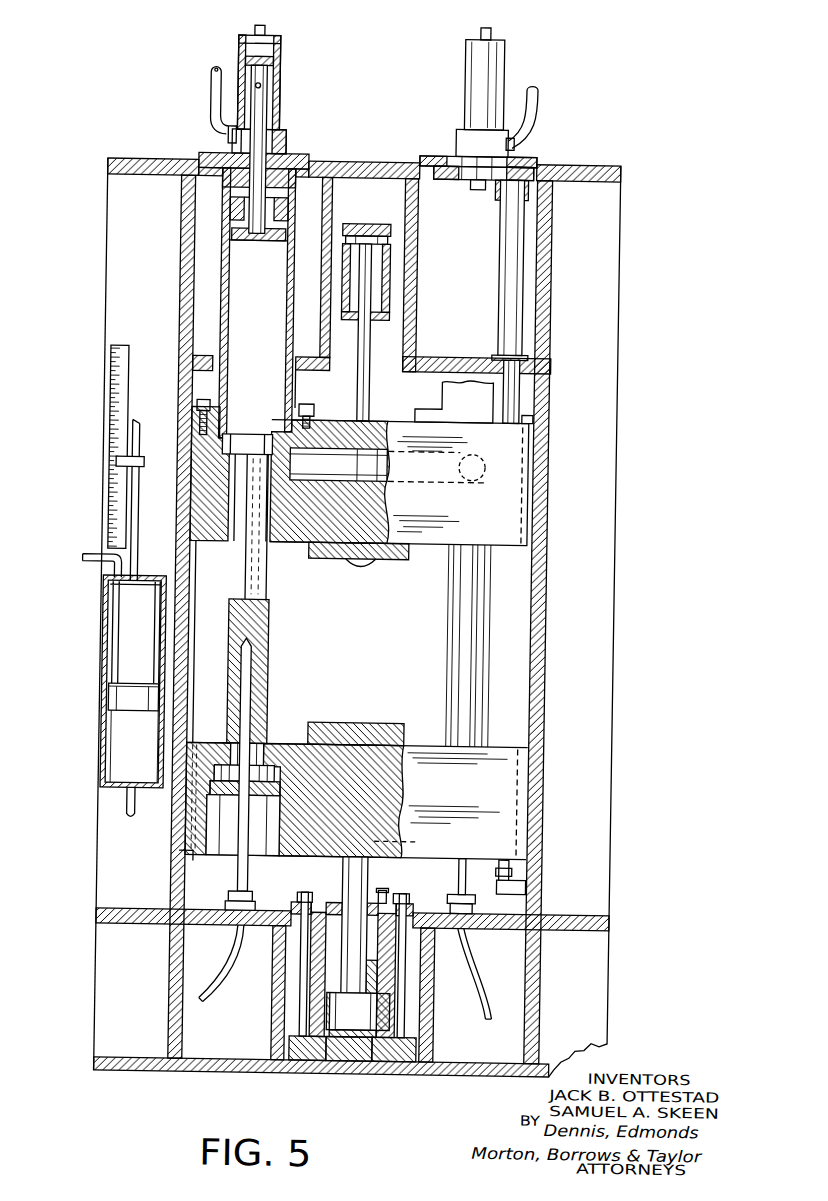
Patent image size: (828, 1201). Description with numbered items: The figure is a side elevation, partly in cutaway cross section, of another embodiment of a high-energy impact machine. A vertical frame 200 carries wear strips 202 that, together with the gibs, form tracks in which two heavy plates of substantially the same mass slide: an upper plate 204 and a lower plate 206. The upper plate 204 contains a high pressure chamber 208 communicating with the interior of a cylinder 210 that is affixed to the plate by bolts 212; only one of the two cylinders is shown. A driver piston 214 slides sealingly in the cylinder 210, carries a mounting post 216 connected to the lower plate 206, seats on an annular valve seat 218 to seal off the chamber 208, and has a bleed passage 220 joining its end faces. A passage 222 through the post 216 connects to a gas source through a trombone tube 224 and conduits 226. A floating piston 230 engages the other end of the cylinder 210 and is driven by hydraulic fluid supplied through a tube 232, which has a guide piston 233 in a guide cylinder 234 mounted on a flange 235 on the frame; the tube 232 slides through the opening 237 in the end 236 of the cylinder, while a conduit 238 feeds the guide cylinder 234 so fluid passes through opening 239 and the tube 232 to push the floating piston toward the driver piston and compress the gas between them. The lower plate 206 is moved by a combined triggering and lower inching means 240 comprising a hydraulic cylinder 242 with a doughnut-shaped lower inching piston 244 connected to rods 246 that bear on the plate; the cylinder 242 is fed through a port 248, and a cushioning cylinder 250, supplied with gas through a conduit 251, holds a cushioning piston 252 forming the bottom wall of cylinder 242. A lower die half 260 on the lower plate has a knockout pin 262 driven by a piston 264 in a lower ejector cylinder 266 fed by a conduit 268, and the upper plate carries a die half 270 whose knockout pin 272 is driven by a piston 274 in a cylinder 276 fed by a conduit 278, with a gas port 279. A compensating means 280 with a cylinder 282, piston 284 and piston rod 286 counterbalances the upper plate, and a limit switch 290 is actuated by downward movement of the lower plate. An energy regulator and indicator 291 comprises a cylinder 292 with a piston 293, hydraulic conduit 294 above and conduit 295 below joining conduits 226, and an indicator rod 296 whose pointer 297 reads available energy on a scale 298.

The vertical frame 200 is at (102, 303).
The wear strips 202 is at (542, 672).
The upper plate 204 is at (516, 506).
The lower plate 206 is at (501, 800).
The high pressure chamber 208 is at (406, 483).
The cylinder 210 is at (217, 325).
The bolts 212 is at (303, 405).
The driver piston 214 is at (261, 440).
The mounting post 216 is at (264, 600).
The annular valve seat 218 is at (220, 481).
The bleed passage 220 is at (277, 436).
The passage 222 is at (251, 667).
The trombone tube 224 is at (252, 707).
The conduits 226 is at (232, 960).
The floating piston 230 is at (222, 213).
The tube 232 is at (258, 117).
The guide piston 233 is at (264, 63).
The guide cylinder 234 is at (275, 92).
The flange 235 is at (212, 155).
The end of cylinder 236 is at (224, 186).
The opening 237 is at (272, 152).
The conduit 238 is at (207, 92).
The opening 239 is at (253, 86).
The combined triggering and lower inching means 240 is at (235, 1084).
The hydraulic cylinder 242 is at (398, 977).
The lower inching piston 244 is at (316, 978).
The rods 246 is at (388, 897).
The port 248 is at (390, 997).
The cushioning cylinder 250 is at (357, 979).
The conduit 251 is at (443, 1036).
The cushioning piston 252 is at (392, 1021).
The lower die half 260 is at (387, 723).
The knockout pin 262 is at (413, 840).
The piston 264 is at (357, 1072).
The lower ejector cylinder 266 is at (322, 1072).
The conduit 268 is at (388, 1072).
The die half 270 is at (398, 560).
The knockout pin 272 is at (366, 570).
The piston 274 is at (384, 242).
The cylinder 276 is at (386, 270).
The conduit 278 is at (365, 222).
The port 279 is at (390, 300).
The compensating means 280 is at (557, 295).
The cylinder 282 is at (511, 262).
The piston 284 is at (522, 186).
The piston rod 286 is at (512, 227).
The limit switch 290 is at (518, 887).
The energy regulator and indicator 291 is at (96, 700).
The cylinder 292 is at (104, 650).
The piston 293 is at (122, 697).
The conduit 294 is at (87, 560).
The conduit 295 is at (128, 813).
The indicator rod 296 is at (130, 605).
The pointer 297 is at (120, 468).
The scale 298 is at (110, 390).